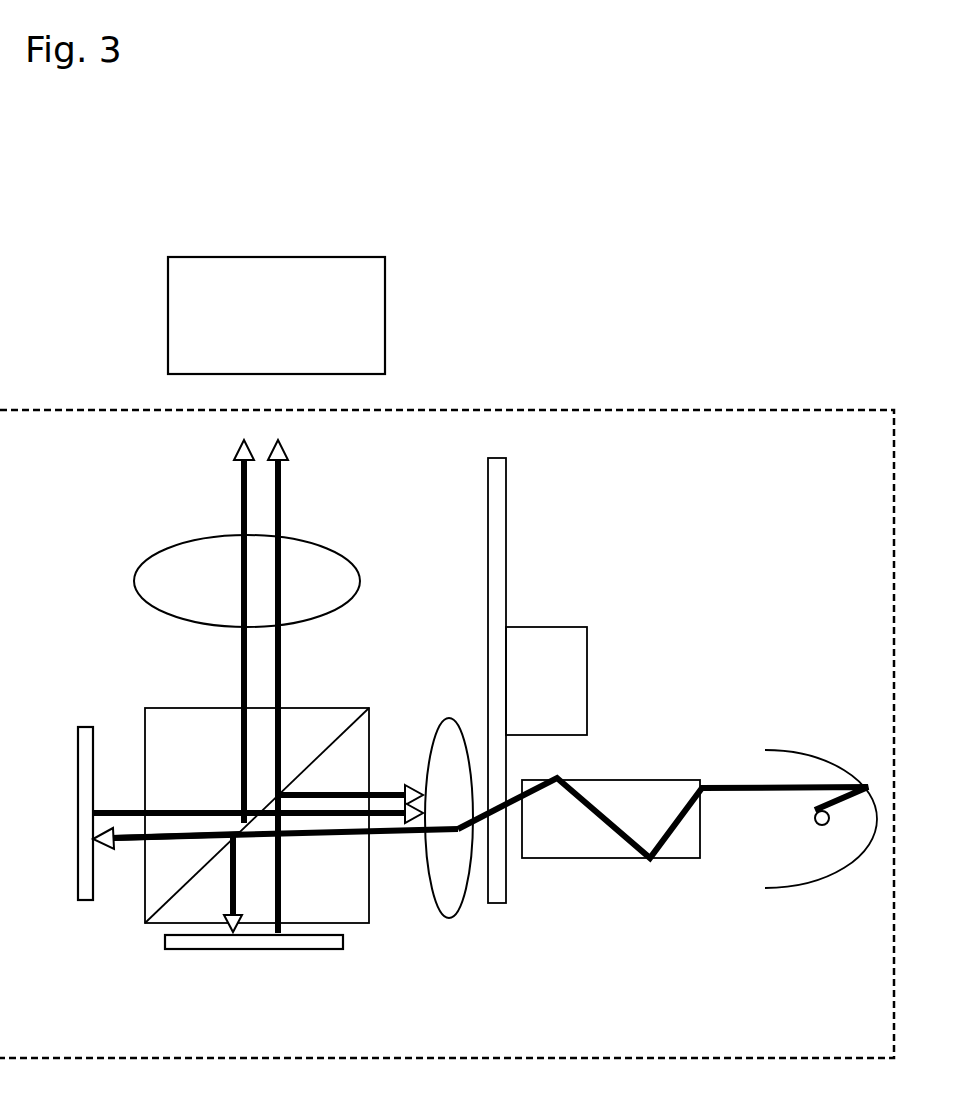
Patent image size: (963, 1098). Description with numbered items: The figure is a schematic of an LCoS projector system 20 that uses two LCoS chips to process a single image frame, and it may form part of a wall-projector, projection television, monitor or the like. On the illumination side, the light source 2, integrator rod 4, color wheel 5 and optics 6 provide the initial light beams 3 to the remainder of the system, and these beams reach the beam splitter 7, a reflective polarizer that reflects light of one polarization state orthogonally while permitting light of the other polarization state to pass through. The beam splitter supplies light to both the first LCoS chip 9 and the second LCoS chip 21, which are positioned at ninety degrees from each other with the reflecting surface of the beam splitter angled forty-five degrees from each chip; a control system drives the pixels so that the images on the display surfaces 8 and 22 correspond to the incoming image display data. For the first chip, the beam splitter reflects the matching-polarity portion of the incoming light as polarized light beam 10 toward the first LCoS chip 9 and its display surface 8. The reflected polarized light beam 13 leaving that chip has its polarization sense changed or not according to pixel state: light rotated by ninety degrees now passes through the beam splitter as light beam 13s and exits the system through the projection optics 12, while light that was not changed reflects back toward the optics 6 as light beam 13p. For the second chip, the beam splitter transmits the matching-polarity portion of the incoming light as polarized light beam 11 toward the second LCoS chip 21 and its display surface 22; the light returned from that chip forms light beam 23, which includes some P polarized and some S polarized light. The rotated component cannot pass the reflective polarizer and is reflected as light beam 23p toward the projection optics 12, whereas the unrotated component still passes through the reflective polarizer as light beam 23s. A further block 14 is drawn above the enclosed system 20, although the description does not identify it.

The light source 2 is at (805, 888).
The initial light beams 3 is at (735, 787).
The integrator rod 4 is at (635, 782).
The color wheel 5 is at (562, 617).
The optics 6 is at (443, 923).
The beam splitter 7 is at (333, 703).
The display surface 8 is at (253, 930).
The first LCoS chip 9 is at (237, 950).
The polarized light beam 10 is at (230, 895).
The polarized light beam 11 is at (130, 846).
The projection optics 12 is at (300, 538).
The reflected polarized light beam 13 is at (282, 893).
The light beam 13s is at (280, 647).
The light beam 13p is at (390, 785).
The control unit 14 is at (350, 255).
The LCoS projector system 20 is at (518, 380).
The second LCoS chip 21 is at (78, 803).
The display surface 22 is at (115, 870).
The light beam 23 is at (120, 807).
The light beam 23p is at (242, 648).
The light beam 23s is at (390, 817).